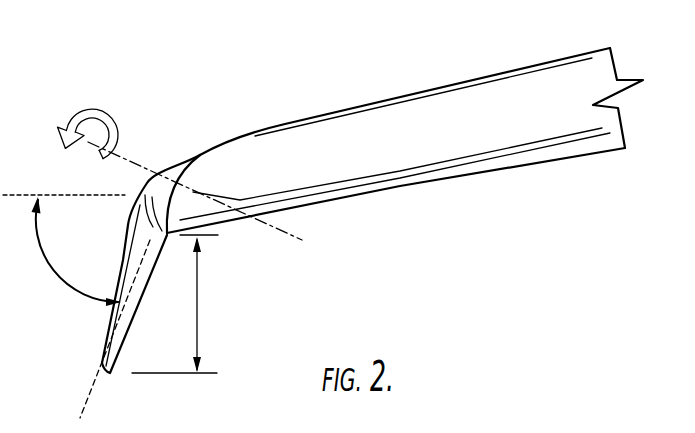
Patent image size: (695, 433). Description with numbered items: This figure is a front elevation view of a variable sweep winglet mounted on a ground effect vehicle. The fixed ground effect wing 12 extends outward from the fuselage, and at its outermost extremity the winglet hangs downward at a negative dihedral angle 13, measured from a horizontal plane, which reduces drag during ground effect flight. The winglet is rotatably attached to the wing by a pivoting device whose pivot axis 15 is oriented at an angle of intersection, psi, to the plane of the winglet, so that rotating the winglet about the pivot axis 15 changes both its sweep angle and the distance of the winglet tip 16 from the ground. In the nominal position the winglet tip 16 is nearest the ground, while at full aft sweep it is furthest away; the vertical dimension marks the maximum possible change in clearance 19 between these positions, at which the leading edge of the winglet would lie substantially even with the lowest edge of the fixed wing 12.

The fixed ground effect wing 12 is at (421, 92).
The negative dihedral angle 13 is at (58, 270).
The pivot axis 15 is at (135, 163).
The winglet tip 16 is at (108, 374).
The change in clearance 19 is at (198, 307).